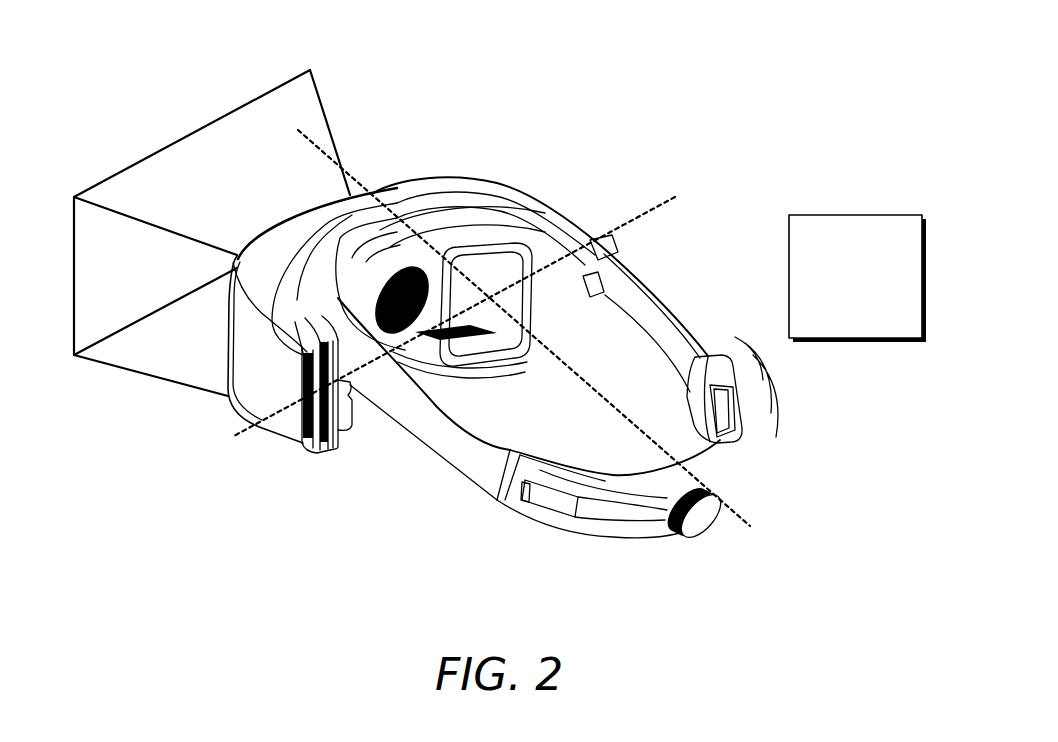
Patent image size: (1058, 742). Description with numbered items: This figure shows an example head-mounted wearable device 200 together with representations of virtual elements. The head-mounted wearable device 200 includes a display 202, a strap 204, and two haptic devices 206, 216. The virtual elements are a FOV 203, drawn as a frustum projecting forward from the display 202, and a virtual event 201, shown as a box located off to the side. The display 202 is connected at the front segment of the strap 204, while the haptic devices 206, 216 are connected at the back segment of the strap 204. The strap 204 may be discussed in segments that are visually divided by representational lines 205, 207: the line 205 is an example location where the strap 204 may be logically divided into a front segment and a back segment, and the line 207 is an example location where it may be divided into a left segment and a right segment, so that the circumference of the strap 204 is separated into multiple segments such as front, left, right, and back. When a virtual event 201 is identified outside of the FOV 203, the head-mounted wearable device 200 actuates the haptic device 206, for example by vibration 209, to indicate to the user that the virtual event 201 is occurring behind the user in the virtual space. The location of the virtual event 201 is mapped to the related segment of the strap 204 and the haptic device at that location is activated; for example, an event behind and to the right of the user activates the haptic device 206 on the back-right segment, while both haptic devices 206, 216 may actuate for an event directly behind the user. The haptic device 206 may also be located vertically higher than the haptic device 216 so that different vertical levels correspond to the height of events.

The head-mounted wearable device 200 is at (630, 68).
The virtual event 201 is at (857, 278).
The display 202 is at (213, 421).
The FOV 203 is at (340, 88).
The strap 204 is at (455, 472).
The representational line 205 is at (653, 207).
The haptic device 206 is at (733, 432).
The representational line 207 is at (753, 528).
The vibration 209 is at (788, 417).
The haptic device 216 is at (548, 512).